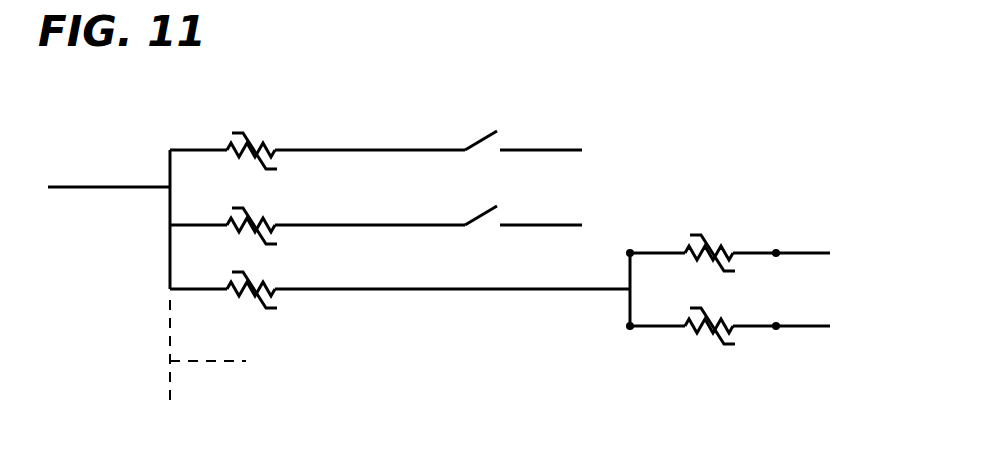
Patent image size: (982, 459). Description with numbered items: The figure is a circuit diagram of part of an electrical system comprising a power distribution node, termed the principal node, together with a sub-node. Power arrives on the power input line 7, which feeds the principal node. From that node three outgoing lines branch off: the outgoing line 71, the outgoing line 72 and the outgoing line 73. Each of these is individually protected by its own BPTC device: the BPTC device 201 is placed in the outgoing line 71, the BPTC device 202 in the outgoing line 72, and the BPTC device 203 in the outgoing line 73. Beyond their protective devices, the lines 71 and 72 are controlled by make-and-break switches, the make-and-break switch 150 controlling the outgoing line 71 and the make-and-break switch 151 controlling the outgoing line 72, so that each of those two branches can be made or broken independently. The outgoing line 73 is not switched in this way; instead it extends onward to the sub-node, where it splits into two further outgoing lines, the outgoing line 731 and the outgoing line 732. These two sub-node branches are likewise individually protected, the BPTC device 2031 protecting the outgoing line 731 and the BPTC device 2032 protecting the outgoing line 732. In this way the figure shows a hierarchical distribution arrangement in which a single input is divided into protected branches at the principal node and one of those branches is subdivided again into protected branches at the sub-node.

The power input line 7 is at (93, 187).
The BPTC device 201 is at (258, 140).
The BPTC device 202 is at (272, 228).
The BPTC device 203 is at (272, 292).
The make-and-break switch 150 is at (482, 138).
The make-and-break switch 151 is at (482, 218).
The outgoing line 71 is at (545, 150).
The outgoing line 72 is at (554, 225).
The outgoing line 73 is at (480, 288).
The BPTC device 2031 is at (730, 253).
The BPTC device 2032 is at (735, 330).
The outgoing line 731 is at (812, 253).
The outgoing line 732 is at (800, 326).